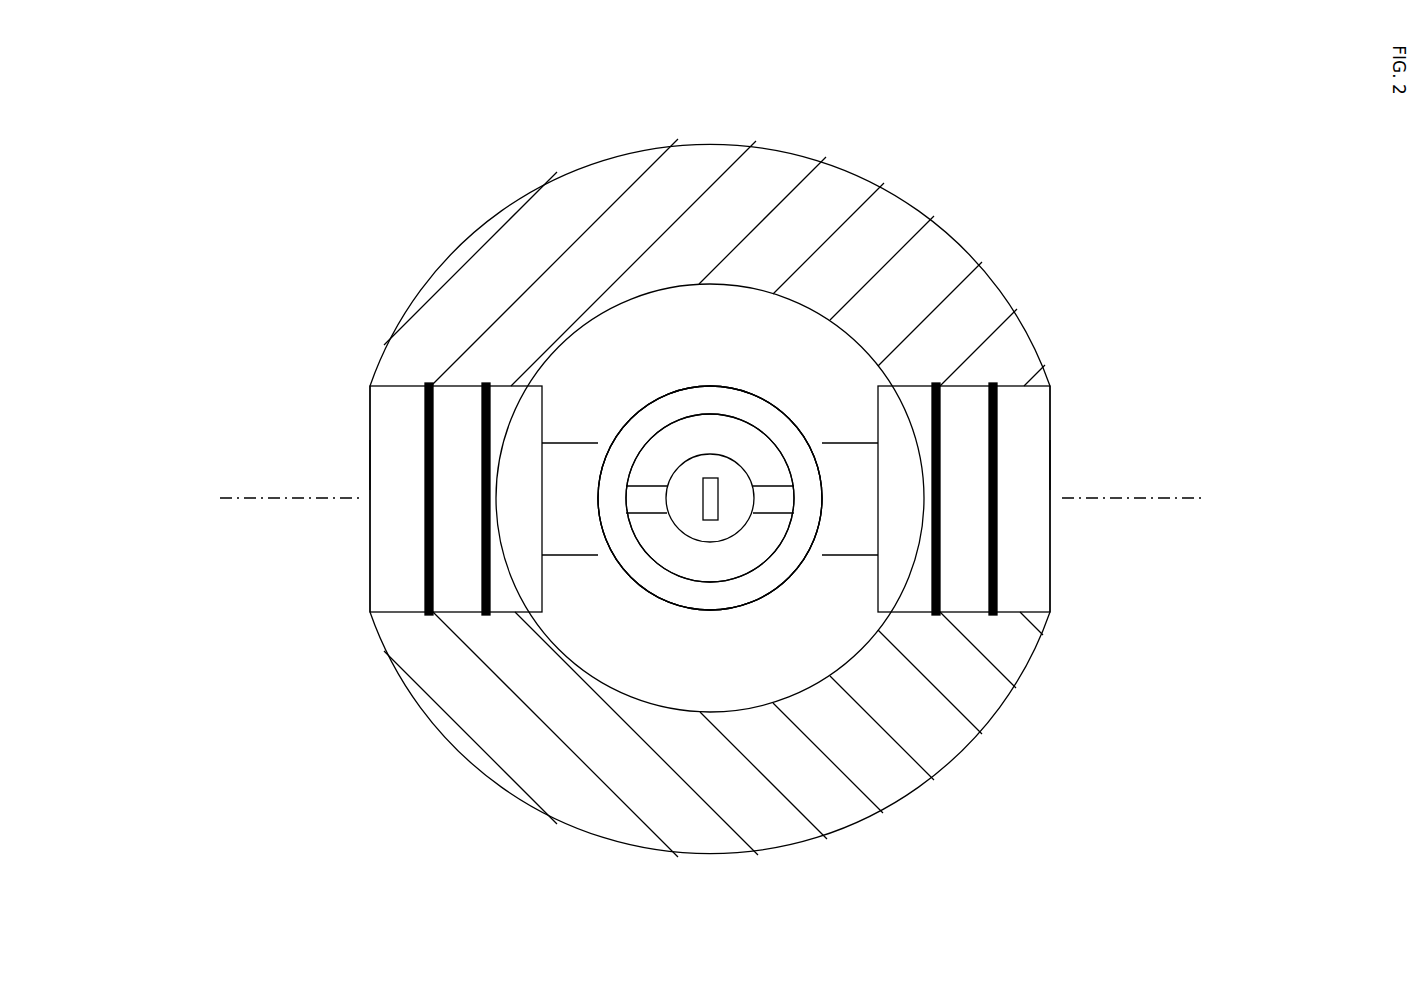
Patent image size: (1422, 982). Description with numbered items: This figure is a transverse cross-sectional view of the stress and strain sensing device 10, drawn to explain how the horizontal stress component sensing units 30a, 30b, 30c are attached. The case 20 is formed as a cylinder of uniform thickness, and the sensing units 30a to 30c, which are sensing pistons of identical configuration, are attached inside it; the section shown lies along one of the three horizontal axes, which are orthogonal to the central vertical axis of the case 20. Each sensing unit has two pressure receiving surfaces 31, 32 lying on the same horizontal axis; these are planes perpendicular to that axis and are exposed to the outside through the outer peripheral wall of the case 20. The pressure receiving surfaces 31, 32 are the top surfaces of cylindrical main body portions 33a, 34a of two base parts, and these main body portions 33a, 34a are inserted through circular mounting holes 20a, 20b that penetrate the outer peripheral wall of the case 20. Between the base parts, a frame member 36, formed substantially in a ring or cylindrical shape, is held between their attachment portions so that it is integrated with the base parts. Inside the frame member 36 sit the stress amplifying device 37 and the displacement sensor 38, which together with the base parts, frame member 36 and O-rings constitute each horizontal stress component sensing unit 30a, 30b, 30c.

The stress and strain sensing device 10 is at (1081, 105).
The case 20 is at (521, 201).
The circular mounting hole 20a is at (391, 386).
The circular mounting hole 20b is at (1027, 388).
The horizontal stress component sensing unit 30a is at (676, 384).
The horizontal stress component sensing unit 30b is at (710, 498).
The horizontal stress component sensing unit 30c is at (710, 498).
The pressure receiving surface 31 is at (370, 548).
The pressure receiving surface 32 is at (1050, 548).
The main body portion 33a is at (370, 465).
The main body portion 34a is at (1050, 472).
The frame member 36 is at (643, 582).
The stress amplifying device 37 is at (705, 540).
The displacement sensor 38 is at (715, 521).